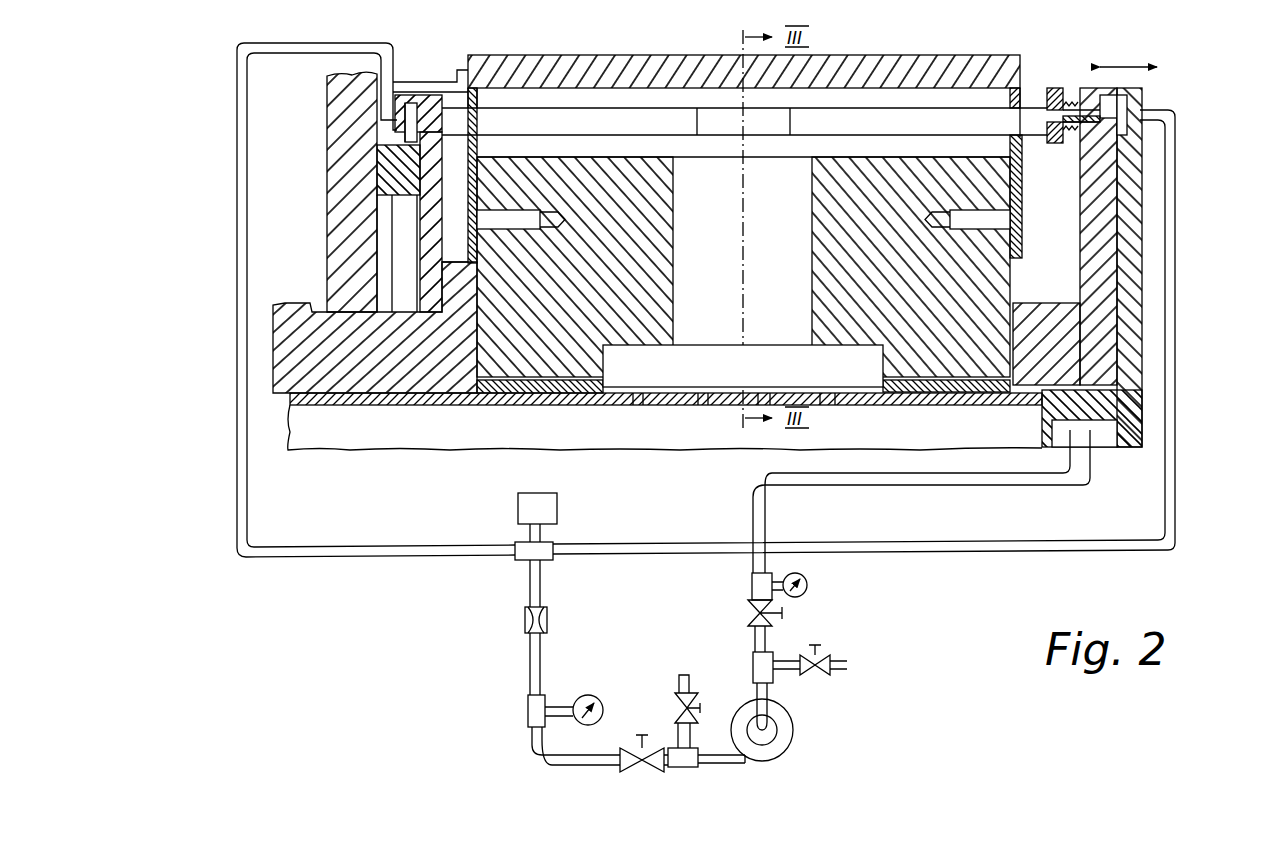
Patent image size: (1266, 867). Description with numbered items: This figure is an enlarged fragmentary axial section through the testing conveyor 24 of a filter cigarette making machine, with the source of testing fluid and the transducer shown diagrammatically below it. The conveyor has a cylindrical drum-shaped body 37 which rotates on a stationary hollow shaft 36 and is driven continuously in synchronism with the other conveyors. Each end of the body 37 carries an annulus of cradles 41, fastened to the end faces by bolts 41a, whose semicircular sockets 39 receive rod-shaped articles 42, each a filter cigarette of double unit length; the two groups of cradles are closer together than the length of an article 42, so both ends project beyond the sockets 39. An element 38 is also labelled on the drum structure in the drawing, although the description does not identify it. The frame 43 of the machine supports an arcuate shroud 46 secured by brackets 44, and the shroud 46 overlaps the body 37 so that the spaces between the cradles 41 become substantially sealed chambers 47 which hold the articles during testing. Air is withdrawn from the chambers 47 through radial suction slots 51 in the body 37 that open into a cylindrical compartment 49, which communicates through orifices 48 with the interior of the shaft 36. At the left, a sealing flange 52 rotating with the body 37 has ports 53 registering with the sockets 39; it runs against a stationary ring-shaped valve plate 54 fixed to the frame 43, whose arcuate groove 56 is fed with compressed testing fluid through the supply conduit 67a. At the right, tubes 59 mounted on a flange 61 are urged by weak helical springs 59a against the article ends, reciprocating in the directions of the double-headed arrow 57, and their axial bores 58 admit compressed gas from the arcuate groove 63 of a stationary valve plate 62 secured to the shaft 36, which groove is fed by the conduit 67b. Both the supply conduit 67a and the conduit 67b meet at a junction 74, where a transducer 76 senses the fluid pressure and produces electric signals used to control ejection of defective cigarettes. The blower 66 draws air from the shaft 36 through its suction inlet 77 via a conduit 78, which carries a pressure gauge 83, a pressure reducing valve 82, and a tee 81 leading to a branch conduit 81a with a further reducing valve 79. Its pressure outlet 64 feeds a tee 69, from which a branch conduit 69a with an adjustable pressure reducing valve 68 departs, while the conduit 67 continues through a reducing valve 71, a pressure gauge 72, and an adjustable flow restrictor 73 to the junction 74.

The testing conveyor 24 is at (210, 105).
The stationary hollow shaft 36 is at (323, 445).
The cylindrical drum-shaped body 37 is at (500, 360).
The cylinder wall 38 is at (917, 145).
The sockets 39 is at (477, 100).
The cradles 41 is at (475, 153).
The bolts 41a is at (454, 265).
The rod-shaped articles 42 is at (813, 120).
The frame 43 is at (340, 168).
The brackets 44 is at (443, 83).
The arcuate cover or shroud 46 is at (592, 70).
The chambers 47 is at (887, 90).
The orifices 48 is at (700, 398).
The cylindrical compartment 49 is at (820, 378).
The suction slots 51 is at (782, 231).
The sealing element or flange 52 is at (430, 218).
The ports 53 is at (425, 127).
The stationary ring-shaped valve plate 54 is at (410, 112).
The arcuate groove 56 is at (408, 115).
The double-headed arrow 57 is at (1130, 63).
The axial bores or passages 58 is at (1067, 97).
The tubes or caps 59 is at (1058, 117).
The weak helical springs 59a is at (1070, 133).
The flange 61 is at (1102, 184).
The stationary valve plate 62 is at (1130, 140).
The arcuate groove 63 is at (1120, 108).
The pressure outlet 64 is at (748, 761).
The combined source of compressed air and suction generating device 66 is at (806, 732).
The conduit 67 is at (532, 750).
The supply conduit 67a is at (342, 558).
The conduit 67b is at (930, 551).
The pressure reducing valve 68 is at (678, 700).
The tee 69 is at (690, 755).
The branch conduit 69a is at (683, 675).
The reducing valve 71 is at (622, 748).
The pressure gauge 72 is at (585, 695).
The flow restrictor 73 is at (525, 620).
The junction 74 is at (545, 563).
The transducer 76 is at (535, 503).
The suction inlet 77 is at (775, 722).
The conduit 78 is at (888, 478).
The pressure reducing valve 79 is at (822, 657).
The tee 81 is at (753, 665).
The branch conduit 81a is at (850, 664).
The pressure reducing valve 82 is at (772, 603).
The pressure gauge 83 is at (808, 584).